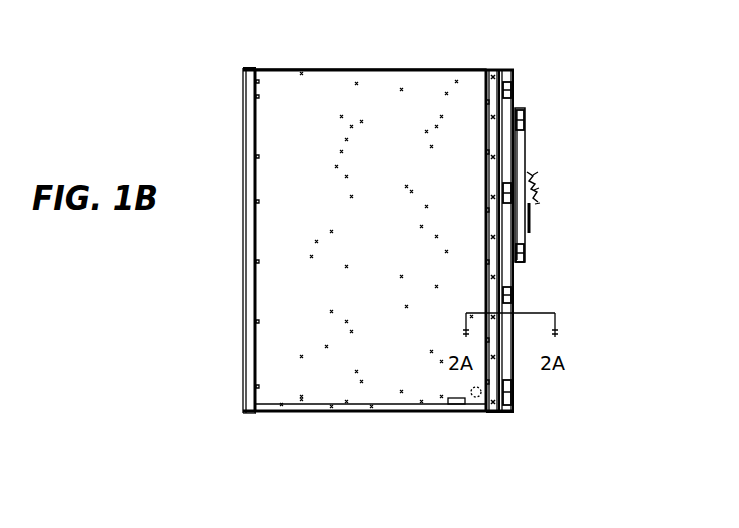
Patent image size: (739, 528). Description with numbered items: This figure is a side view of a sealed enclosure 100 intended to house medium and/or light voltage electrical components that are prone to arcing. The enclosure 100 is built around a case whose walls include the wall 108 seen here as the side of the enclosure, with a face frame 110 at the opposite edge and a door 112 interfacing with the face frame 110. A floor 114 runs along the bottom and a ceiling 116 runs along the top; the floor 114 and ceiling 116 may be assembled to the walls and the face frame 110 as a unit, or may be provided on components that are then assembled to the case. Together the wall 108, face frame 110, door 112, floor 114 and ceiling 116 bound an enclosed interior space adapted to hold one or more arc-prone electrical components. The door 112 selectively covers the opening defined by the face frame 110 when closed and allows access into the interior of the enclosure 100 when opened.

The enclosure 100 is at (233, 302).
The wall 108 is at (245, 200).
The face frame 110 is at (515, 85).
The door 112 is at (512, 275).
The floor 114 is at (375, 413).
The ceiling 116 is at (372, 68).